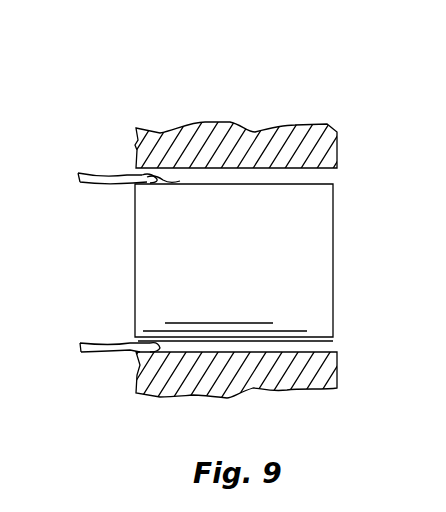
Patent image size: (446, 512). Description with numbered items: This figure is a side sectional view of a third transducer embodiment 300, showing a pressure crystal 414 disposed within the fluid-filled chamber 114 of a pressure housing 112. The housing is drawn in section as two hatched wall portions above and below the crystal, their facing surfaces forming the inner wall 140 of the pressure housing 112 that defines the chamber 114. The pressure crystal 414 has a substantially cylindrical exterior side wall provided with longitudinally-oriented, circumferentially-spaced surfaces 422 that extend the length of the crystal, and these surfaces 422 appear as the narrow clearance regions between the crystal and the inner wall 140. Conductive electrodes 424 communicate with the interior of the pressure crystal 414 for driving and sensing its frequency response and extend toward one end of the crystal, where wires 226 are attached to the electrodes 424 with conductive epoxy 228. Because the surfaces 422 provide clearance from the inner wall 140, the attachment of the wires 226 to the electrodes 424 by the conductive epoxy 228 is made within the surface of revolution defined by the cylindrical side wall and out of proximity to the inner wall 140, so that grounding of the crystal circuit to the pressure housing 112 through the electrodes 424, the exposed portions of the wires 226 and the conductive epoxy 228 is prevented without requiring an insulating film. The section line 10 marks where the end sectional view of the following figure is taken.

The third transducer embodiment 300 is at (330, 84).
The section line 10— 10 is at (292, 117).
The pressure housing 112 is at (337, 131).
The chamber 114 is at (138, 397).
The pressure crystal 414 is at (341, 265).
The surfaces 422 is at (318, 178).
The conductive electrodes 424 is at (185, 183).
The wires 226 is at (97, 342).
The conductive epoxy 228 is at (140, 176).
The inner wall 140 is at (282, 346).